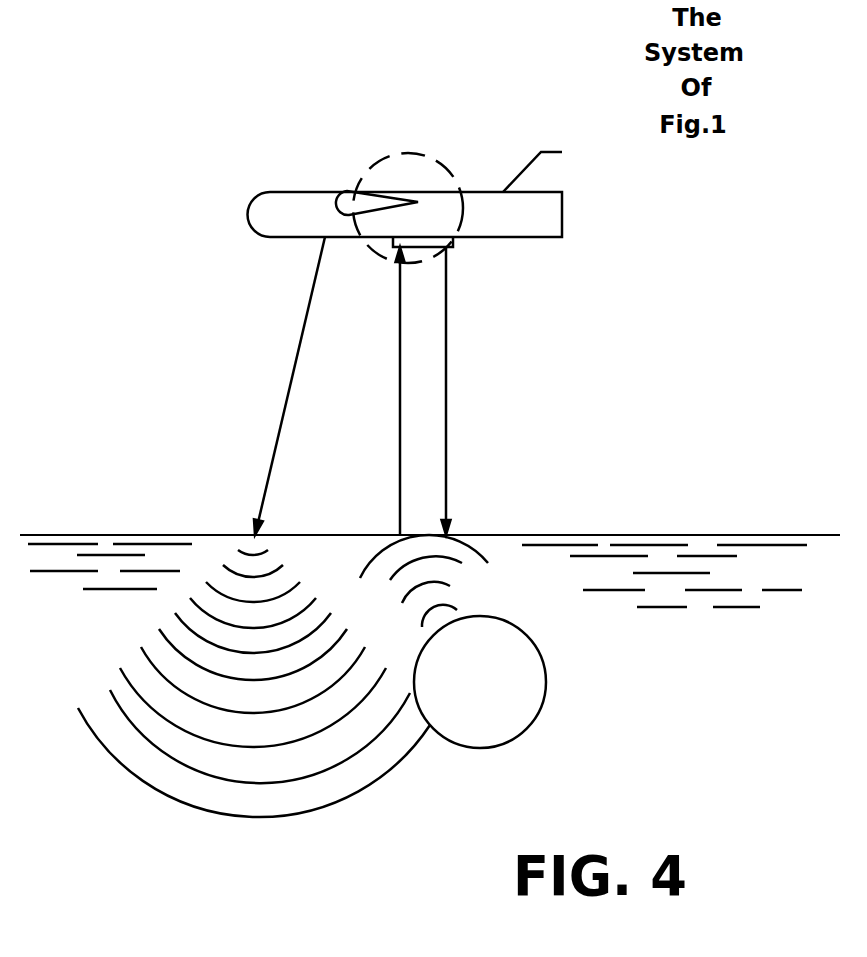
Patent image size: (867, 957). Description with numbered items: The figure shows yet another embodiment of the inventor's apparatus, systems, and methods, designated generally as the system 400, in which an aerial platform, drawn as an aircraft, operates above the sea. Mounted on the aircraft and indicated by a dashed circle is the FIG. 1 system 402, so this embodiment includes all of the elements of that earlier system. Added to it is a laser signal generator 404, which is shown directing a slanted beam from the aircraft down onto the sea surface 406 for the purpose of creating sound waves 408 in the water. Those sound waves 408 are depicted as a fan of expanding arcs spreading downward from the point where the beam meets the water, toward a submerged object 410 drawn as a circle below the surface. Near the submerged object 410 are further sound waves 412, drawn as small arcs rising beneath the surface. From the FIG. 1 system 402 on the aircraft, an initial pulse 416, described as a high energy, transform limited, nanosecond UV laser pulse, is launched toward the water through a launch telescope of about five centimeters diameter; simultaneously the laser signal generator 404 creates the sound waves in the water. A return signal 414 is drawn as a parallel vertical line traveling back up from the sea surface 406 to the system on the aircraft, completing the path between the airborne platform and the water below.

The system 400 is at (260, 76).
The FIG. 1 system 402 is at (433, 151).
The laser signal generator 404 is at (292, 365).
The sea surface 406 is at (718, 535).
The sound waves 408 is at (177, 612).
The submerged object 410 is at (498, 707).
The sound waves 412 is at (450, 586).
The return signal 414 is at (400, 449).
The initial pulse 416 is at (446, 400).